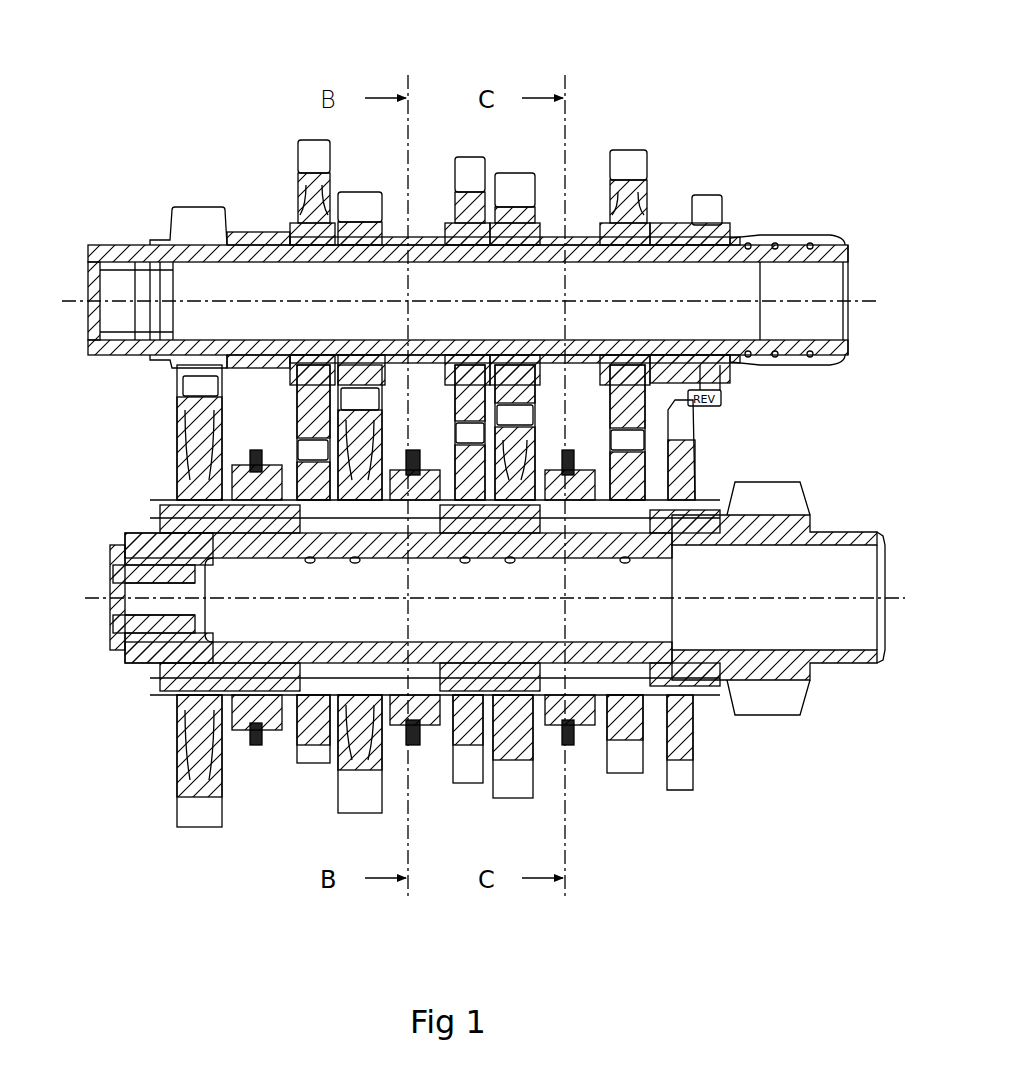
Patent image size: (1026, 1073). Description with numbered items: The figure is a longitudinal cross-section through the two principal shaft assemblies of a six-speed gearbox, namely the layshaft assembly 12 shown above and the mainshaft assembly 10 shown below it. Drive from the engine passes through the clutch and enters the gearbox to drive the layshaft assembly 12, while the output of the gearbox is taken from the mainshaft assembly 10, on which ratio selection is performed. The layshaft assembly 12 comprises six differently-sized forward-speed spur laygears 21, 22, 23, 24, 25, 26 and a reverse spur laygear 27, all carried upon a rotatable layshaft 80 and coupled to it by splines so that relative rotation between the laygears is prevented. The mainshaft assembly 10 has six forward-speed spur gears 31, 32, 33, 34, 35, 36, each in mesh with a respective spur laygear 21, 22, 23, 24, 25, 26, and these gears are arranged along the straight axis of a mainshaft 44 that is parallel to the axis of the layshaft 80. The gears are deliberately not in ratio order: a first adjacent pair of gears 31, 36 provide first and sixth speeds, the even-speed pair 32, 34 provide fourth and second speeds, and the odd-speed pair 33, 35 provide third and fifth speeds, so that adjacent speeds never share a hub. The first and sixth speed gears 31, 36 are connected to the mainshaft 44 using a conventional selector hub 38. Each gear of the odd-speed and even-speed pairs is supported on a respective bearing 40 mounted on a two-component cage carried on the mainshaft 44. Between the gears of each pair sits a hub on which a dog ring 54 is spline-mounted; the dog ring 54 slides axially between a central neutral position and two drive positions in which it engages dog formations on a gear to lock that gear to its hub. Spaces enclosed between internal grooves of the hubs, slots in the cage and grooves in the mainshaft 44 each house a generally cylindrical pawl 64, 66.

The mainshaft assembly 10 is at (828, 695).
The layshaft assembly 12 is at (812, 212).
The forward-speed spur laygear 21 is at (213, 205).
The forward-speed spur laygear 22 is at (347, 192).
The forward-speed spur laygear 23 is at (507, 173).
The forward-speed spur laygear 24 is at (462, 157).
The forward-speed spur laygear 25 is at (630, 150).
The forward-speed spur laygear 26 is at (306, 140).
The reverse spur laygear 27 is at (710, 195).
The forward-speed spur gear 31 is at (202, 828).
The forward-speed spur gear 32 is at (362, 814).
The forward-speed spur gear 33 is at (515, 799).
The forward-speed spur gear 34 is at (466, 784).
The forward-speed spur gear 35 is at (624, 774).
The forward-speed spur gear 36 is at (306, 765).
The selector hub 38 is at (238, 700).
The bearing 40 is at (162, 240).
The mainshaft 44 is at (850, 532).
The dog ring 54 is at (416, 745).
The pawl 64 is at (603, 517).
The pawl 66 is at (385, 520).
The layshaft 80 is at (760, 240).